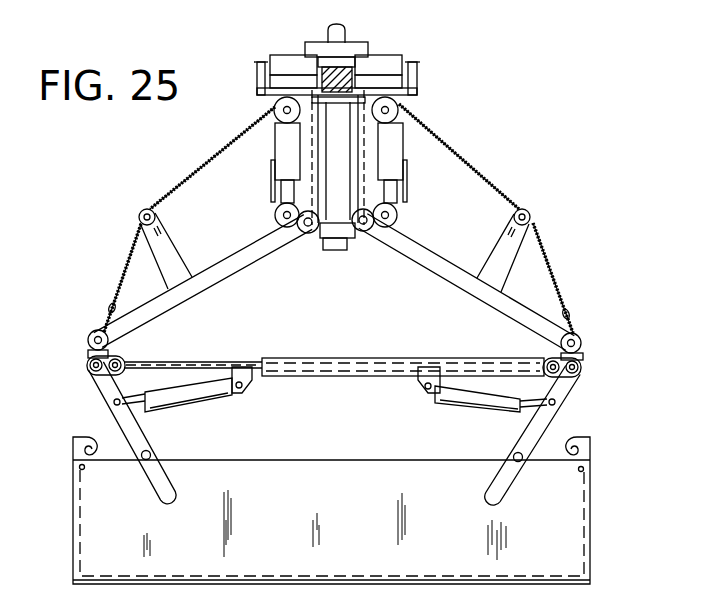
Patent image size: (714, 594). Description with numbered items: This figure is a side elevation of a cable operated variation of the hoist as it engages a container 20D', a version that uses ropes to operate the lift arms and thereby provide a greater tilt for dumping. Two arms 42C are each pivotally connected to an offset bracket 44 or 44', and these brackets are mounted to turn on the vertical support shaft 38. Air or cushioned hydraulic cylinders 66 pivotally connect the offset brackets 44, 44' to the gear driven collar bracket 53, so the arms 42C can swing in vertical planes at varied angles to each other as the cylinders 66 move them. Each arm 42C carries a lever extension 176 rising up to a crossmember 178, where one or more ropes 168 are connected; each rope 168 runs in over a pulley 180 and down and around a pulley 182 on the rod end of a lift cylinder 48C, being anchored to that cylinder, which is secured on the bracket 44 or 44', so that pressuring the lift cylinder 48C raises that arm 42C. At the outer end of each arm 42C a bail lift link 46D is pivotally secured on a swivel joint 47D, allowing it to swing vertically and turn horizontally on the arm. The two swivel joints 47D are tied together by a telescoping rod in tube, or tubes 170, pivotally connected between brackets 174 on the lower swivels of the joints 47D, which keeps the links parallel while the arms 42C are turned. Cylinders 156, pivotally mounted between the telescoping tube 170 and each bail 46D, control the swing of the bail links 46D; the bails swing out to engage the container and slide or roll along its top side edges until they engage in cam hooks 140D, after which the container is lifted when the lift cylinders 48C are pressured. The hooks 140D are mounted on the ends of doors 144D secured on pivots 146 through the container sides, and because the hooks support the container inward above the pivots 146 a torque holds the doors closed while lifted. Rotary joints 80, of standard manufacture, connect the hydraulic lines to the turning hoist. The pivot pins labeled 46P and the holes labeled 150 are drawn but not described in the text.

The rotary joint 80 is at (335, 92).
The bracket 53 is at (368, 44).
The cylinder 66 is at (268, 56).
The pulley 180 is at (274, 108).
The vertical support shaft 38 is at (338, 250).
The lift cylinder 48C is at (281, 142).
The pulley 182 is at (275, 218).
The offset bracket 44' is at (294, 251).
The offset bracket 44 is at (377, 250).
The arm 42C is at (254, 280).
The lever extension 176 is at (163, 246).
The crossmember 178 is at (139, 214).
The rope 168 is at (214, 152).
The swivel joint 47D is at (88, 356).
The bracket 174 is at (120, 362).
The pivot pins 46P is at (92, 369).
The telescoping tube 170 is at (296, 352).
The bail lift link 46D is at (138, 436).
The arm holes 150 is at (152, 456).
The cylinder 156 is at (185, 398).
The container 20D' is at (345, 504).
The door 144D is at (590, 516).
The cam hook 140D is at (74, 442).
The pivot 146 is at (78, 467).